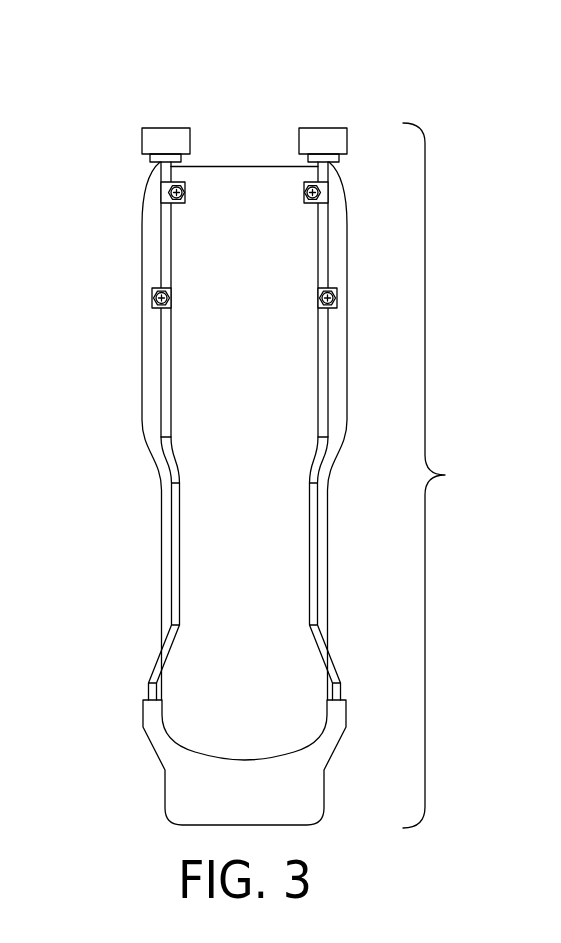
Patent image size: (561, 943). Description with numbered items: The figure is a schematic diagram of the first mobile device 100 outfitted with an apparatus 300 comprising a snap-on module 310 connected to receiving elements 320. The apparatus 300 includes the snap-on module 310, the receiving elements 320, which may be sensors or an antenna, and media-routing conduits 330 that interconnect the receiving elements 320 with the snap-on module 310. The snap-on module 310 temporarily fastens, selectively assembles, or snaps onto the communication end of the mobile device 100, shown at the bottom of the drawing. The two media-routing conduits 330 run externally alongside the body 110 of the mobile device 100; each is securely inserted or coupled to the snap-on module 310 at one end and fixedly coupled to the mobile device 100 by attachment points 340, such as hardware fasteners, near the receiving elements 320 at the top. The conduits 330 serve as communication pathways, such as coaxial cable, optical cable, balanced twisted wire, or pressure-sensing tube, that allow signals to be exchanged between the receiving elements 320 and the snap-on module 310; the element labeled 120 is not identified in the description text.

The mobile device 100 is at (88, 167).
The body 110 is at (148, 378).
The cross member 120 is at (245, 164).
The apparatus 300 is at (264, 451).
The snap-on module 310 is at (165, 785).
The receiving elements 320 is at (190, 138).
The media-routing conduits 330 is at (171, 498).
The attachment points 340 is at (176, 193).